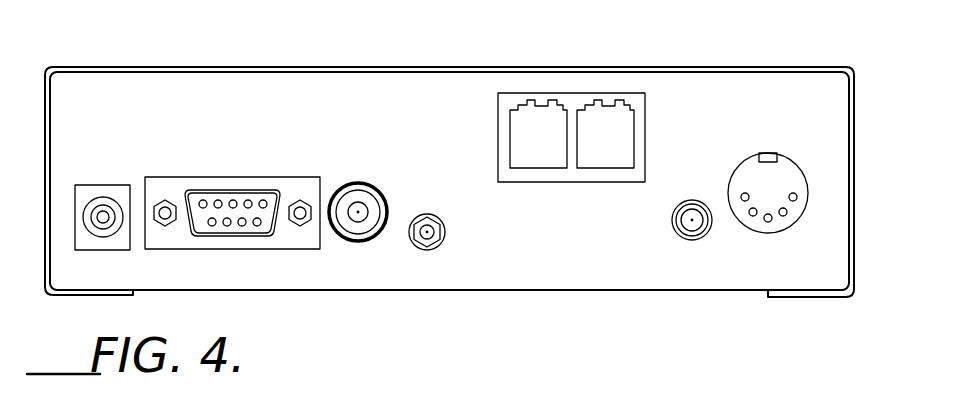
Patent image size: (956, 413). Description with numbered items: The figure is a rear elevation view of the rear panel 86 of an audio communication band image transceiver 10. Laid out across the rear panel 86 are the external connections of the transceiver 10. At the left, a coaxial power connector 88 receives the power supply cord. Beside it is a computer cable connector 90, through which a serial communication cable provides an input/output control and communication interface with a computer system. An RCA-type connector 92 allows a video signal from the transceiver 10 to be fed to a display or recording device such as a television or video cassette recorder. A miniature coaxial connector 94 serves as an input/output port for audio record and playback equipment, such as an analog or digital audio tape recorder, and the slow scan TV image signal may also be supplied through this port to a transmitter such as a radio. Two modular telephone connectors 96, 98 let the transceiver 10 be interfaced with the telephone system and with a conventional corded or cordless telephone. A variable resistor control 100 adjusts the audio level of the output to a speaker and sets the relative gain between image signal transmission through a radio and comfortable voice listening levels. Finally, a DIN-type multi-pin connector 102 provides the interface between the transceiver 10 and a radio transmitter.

The transceiver 10 is at (513, 40).
The rear panel 86 is at (392, 92).
The coaxial power connector 88 is at (115, 205).
The computer cable connector 90 is at (258, 193).
The RCA-type connector 92 is at (360, 228).
The miniature coaxial connector 94 is at (433, 236).
The modular telephone connector 96 is at (543, 102).
The modular telephone connector 98 is at (615, 102).
The variable resistor control 100 is at (692, 229).
The DIN-type multi-pin connector 102 is at (768, 231).